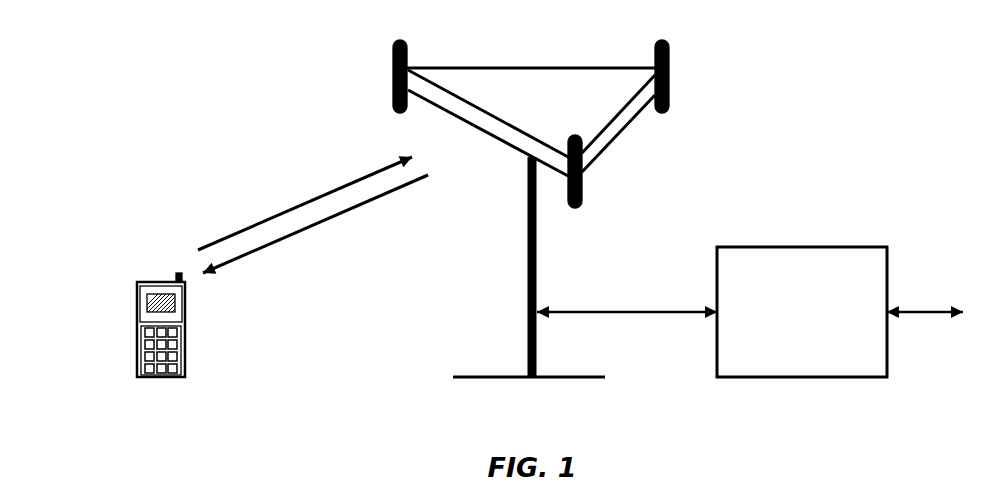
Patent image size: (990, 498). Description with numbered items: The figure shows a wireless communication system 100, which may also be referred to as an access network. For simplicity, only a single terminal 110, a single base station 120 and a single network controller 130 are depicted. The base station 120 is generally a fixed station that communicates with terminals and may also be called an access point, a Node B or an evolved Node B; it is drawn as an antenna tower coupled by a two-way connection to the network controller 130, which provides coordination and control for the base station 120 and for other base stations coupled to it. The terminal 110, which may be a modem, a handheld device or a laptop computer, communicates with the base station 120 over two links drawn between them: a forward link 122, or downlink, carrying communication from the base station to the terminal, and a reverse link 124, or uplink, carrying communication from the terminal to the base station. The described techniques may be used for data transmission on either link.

The wireless communication system 100 is at (893, 74).
The terminal 110 is at (160, 282).
The base station 120 is at (523, 67).
The forward link 122 is at (318, 225).
The reverse link 124 is at (308, 202).
The network controller 130 is at (797, 246).